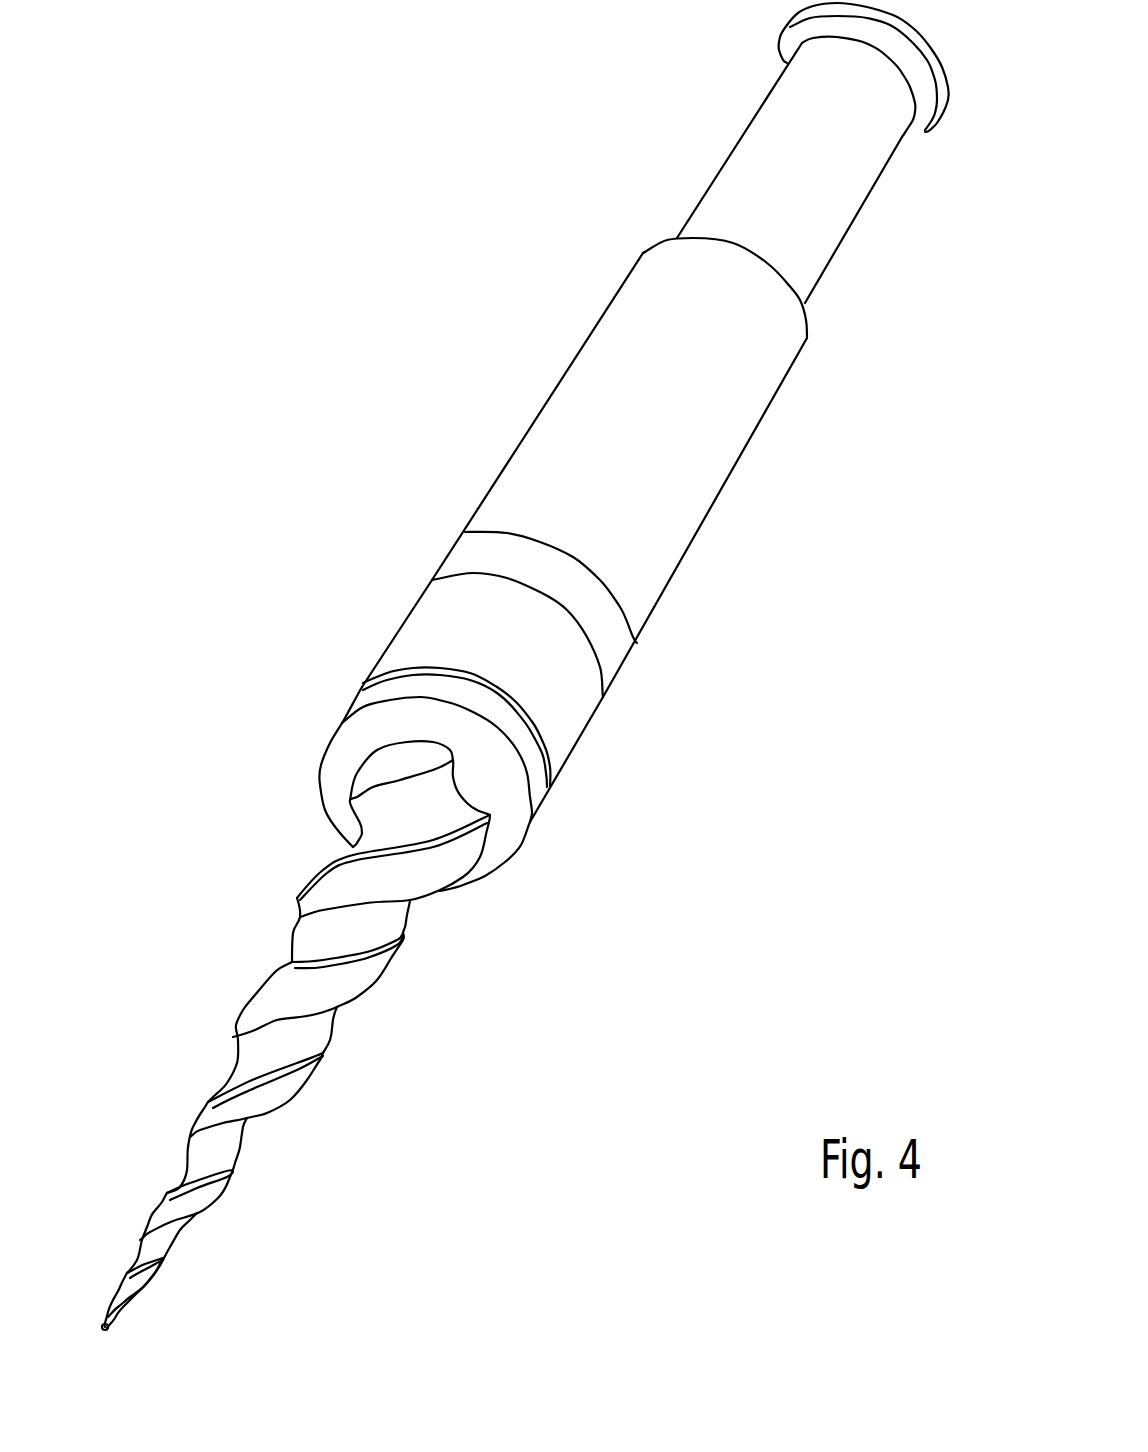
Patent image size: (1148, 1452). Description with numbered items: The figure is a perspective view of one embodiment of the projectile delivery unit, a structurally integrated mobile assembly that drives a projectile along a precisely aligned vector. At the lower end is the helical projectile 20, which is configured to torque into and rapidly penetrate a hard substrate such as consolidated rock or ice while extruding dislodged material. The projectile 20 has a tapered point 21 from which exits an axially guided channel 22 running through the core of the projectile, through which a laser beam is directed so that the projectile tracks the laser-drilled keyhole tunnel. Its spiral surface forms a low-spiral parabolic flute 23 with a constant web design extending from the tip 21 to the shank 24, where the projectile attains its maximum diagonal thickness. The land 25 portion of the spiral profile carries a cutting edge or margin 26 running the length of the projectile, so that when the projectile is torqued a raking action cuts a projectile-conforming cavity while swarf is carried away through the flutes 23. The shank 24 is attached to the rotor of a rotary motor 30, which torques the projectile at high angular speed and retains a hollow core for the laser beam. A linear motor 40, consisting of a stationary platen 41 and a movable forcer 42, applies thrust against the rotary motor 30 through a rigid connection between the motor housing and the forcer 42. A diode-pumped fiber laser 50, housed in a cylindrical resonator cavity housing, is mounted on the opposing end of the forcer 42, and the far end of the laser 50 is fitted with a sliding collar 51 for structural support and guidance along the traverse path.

The projectile 20 is at (282, 1073).
The tapered point 21 is at (113, 1318).
The axially guided channel 22 is at (102, 1330).
The parabolic flute 23 is at (222, 1147).
The shank 24 is at (507, 828).
The land 25 is at (215, 1110).
The cutting edge 26 is at (280, 972).
The rotary motor 30 is at (400, 618).
The linear motor 40 is at (540, 407).
The stationary platen 41 is at (730, 440).
The movable forcer 42 is at (611, 663).
The diode-pumped fiber laser 50 is at (733, 155).
The sliding collar 51 is at (918, 120).